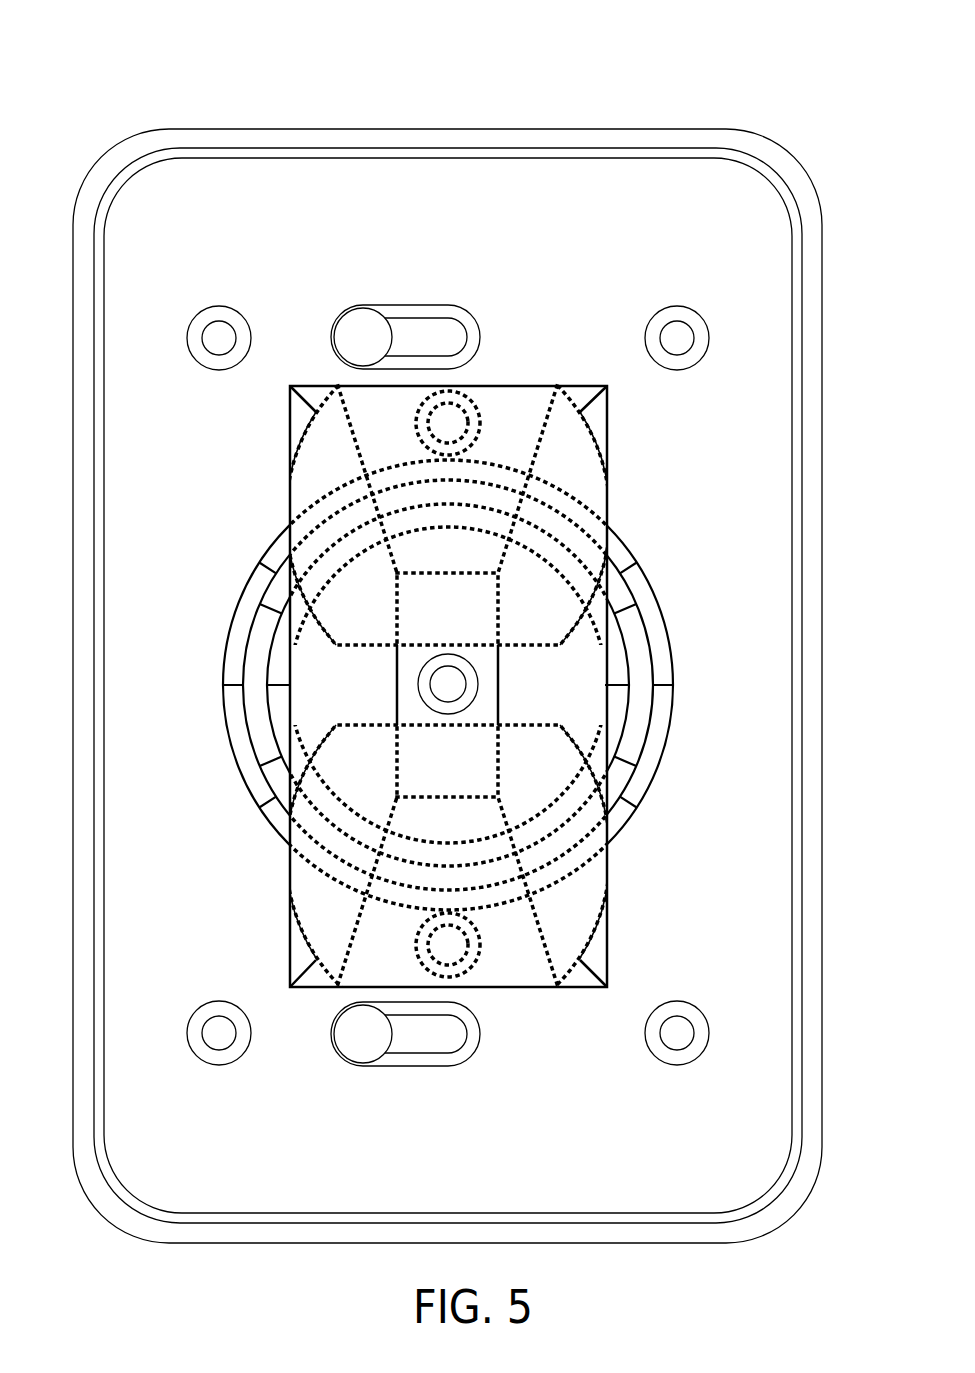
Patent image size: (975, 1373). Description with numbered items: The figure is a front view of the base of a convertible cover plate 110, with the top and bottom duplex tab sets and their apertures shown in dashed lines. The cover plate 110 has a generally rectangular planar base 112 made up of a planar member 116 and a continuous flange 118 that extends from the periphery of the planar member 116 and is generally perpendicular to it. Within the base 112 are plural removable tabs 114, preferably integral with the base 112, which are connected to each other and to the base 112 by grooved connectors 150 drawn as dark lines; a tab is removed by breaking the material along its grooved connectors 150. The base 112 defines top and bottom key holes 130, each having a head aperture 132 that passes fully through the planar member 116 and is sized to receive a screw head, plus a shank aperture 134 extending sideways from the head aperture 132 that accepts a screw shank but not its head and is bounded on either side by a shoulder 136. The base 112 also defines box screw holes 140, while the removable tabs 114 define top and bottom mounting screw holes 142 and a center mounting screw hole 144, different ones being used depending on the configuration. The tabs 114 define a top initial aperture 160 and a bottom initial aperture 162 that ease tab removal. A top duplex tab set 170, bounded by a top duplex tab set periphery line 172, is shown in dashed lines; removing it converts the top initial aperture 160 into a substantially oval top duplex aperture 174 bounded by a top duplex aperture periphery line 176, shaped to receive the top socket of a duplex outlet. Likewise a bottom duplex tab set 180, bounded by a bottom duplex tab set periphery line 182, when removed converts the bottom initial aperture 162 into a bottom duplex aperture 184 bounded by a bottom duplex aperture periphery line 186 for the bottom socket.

The cover plate 110 is at (439, 624).
The base 112 is at (130, 143).
The removable tabs 114 is at (282, 548).
The planar member 116 is at (462, 178).
The continuous flange 118 is at (628, 155).
The key hole 130 is at (426, 694).
The head aperture 132 is at (357, 318).
The shank aperture 134 is at (462, 326).
The shoulder 136 is at (477, 342).
The box screw holes 140 is at (218, 332).
The top and bottom mounting screw holes 142 is at (462, 428).
The center mounting screw hole 144 is at (458, 690).
The grooved connectors 150 is at (290, 452).
The top initial aperture 160 is at (472, 605).
The bottom initial aperture 162 is at (470, 758).
The top duplex tab set 170 is at (486, 492).
The top duplex tab set periphery line 172 is at (397, 598).
The top duplex aperture 174 is at (565, 387).
The top duplex aperture periphery line 176 is at (600, 437).
The bottom duplex tab set 180 is at (485, 878).
The bottom duplex tab set periphery line 182 is at (397, 750).
The bottom duplex aperture 184 is at (530, 965).
The bottom duplex aperture periphery line 186 is at (602, 920).